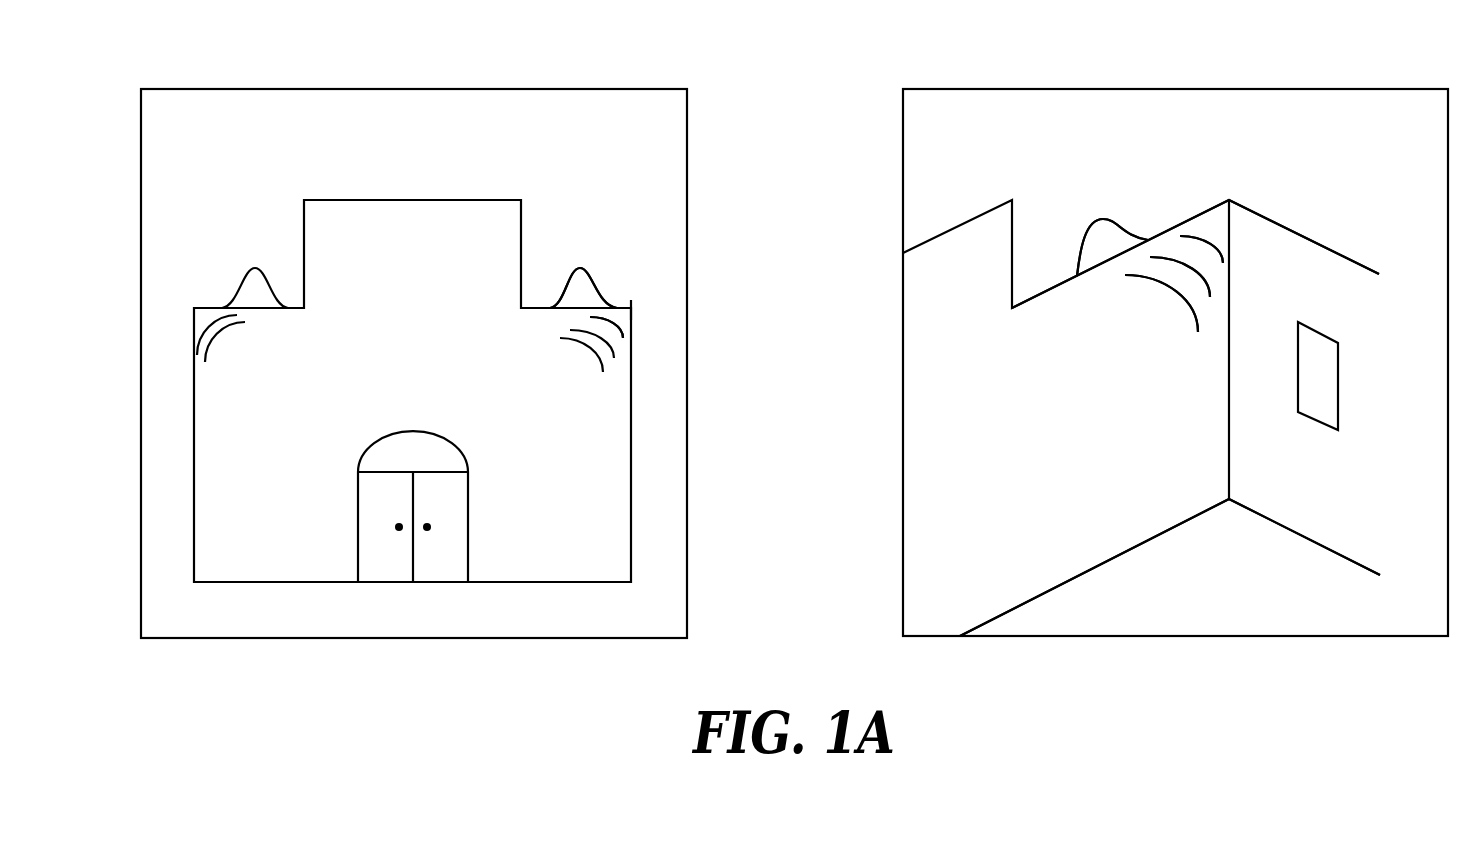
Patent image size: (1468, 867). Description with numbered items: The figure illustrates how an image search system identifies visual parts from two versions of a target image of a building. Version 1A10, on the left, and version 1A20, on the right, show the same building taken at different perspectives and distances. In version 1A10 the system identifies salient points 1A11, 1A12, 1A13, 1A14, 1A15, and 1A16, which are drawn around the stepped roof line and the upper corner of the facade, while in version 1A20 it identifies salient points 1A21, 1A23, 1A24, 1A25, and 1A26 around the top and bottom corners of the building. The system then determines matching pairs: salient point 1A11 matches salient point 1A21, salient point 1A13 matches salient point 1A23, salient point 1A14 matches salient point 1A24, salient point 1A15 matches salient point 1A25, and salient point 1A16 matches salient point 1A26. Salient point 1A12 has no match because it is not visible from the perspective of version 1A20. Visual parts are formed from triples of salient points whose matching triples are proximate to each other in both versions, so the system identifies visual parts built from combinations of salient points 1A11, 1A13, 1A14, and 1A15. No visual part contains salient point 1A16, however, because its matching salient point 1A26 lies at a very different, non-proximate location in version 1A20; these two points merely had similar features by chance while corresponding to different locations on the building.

The version 1A10 is at (414, 349).
The salient point 1A11 is at (634, 296).
The salient point 1A12 is at (616, 306).
The salient point 1A13 is at (566, 322).
The salient point 1A14 is at (607, 380).
The salient point 1A15 is at (631, 340).
The salient point 1A16 is at (634, 308).
The version 1A20 is at (1175, 348).
The salient point 1A21 is at (1231, 192).
The salient point 1A23 is at (1116, 274).
The salient point 1A24 is at (1198, 336).
The salient point 1A25 is at (1216, 297).
The salient point 1A26 is at (1236, 494).